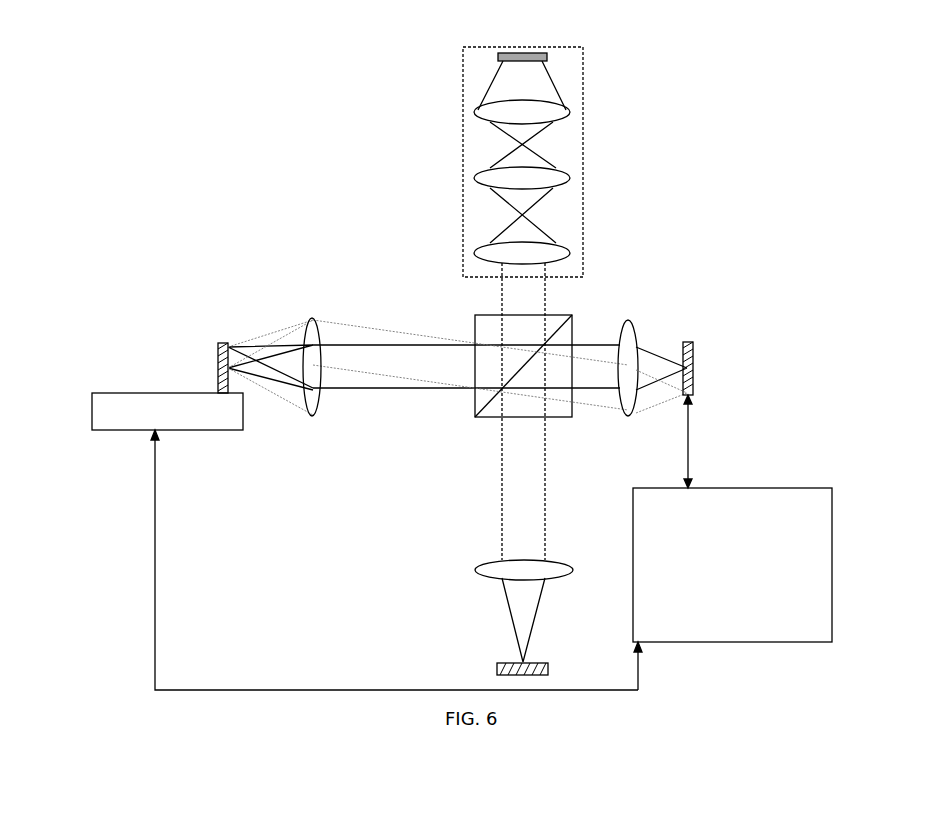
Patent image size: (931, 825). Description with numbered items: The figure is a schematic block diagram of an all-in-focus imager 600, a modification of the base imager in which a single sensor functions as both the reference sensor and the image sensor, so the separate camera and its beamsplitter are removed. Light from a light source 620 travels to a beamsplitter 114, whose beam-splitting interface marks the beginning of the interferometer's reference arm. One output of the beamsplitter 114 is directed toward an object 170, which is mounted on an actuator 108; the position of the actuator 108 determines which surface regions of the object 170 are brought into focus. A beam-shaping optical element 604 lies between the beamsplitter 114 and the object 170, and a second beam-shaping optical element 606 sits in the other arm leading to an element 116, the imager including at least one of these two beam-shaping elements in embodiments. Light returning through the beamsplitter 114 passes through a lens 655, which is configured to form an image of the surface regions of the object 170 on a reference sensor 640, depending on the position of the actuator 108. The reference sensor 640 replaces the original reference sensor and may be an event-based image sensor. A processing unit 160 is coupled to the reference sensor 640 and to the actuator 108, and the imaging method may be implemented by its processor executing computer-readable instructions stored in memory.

The all-in-focus imager 600 is at (118, 104).
The light source 620 is at (578, 124).
The beamsplitter 114 is at (557, 315).
The object 170 is at (222, 343).
The beam-shaping optical element 604 is at (313, 318).
The actuator 108 is at (167, 411).
The lens 655 is at (632, 417).
The reference sensor 640 is at (695, 343).
The processing unit 160 is at (732, 565).
The beam-shaping optical element 606 is at (478, 568).
The sample 116 is at (497, 665).